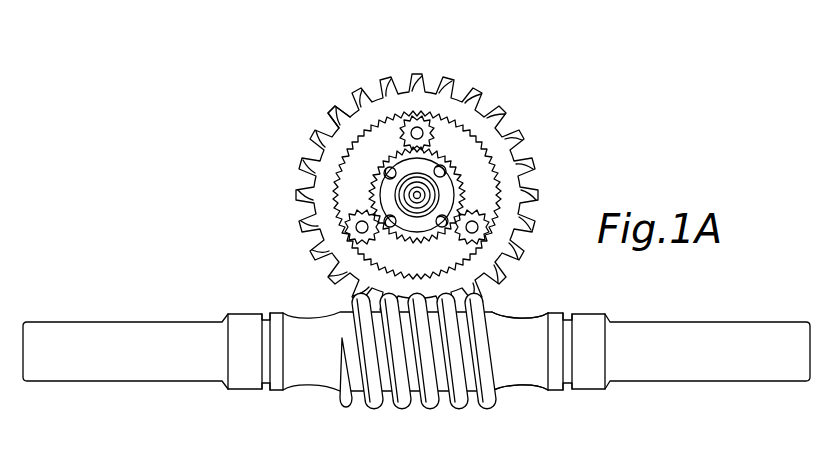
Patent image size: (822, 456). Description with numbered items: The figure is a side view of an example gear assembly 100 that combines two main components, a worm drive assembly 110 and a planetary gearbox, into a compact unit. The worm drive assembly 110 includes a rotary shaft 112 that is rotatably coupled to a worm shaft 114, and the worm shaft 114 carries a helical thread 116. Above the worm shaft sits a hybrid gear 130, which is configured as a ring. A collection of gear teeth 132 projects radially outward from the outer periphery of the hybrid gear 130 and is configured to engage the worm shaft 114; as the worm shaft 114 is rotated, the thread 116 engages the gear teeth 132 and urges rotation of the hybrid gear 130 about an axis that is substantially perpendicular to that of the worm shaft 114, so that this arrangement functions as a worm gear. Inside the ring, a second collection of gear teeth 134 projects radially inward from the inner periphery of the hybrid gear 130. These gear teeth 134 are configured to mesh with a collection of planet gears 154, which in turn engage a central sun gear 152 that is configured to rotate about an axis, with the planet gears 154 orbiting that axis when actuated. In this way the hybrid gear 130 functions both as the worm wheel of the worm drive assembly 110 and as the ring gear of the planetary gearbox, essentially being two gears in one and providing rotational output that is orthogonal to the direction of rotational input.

The gear assembly 100 is at (248, 80).
The worm drive assembly 110 is at (161, 286).
The rotary shaft 112 is at (123, 358).
The worm shaft 114 is at (492, 427).
The helical thread 116 is at (493, 360).
The hybrid gear 130 is at (331, 143).
The gear teeth 132 is at (307, 153).
The gear teeth 134 is at (340, 151).
The sun gear 152 is at (462, 175).
The planet gears 154 is at (430, 125).